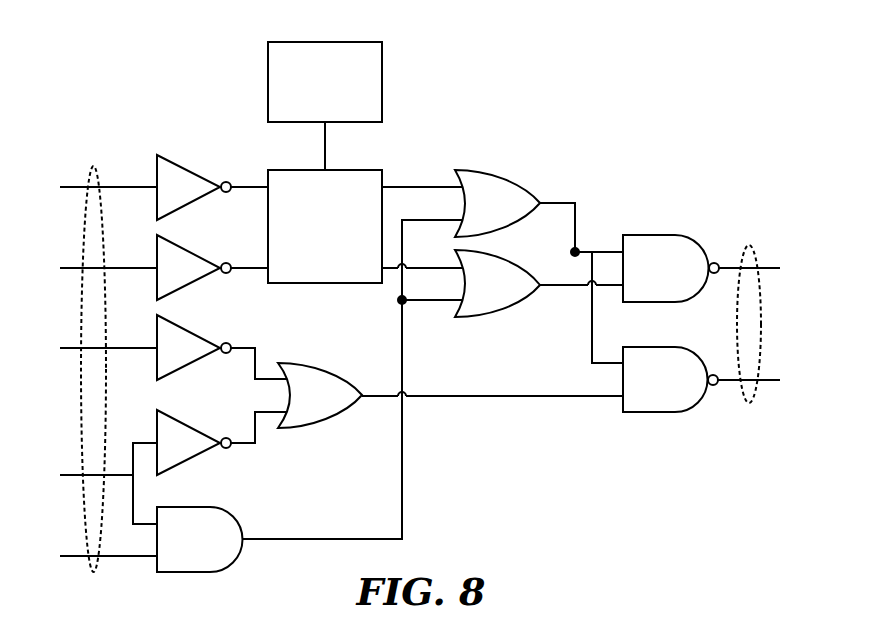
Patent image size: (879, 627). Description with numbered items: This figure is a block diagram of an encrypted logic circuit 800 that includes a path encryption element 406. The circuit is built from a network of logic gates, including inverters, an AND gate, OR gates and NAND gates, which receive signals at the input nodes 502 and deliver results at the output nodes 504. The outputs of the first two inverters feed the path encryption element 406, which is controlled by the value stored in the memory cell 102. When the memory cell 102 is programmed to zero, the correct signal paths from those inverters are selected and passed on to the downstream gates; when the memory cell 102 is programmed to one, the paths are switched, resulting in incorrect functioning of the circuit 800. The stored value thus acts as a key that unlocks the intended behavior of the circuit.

The circuit 800 is at (470, 523).
The memory cell 102 is at (311, 116).
The path encryption element 406 is at (311, 260).
The input nodes 502 is at (93, 165).
The output nodes 504 is at (749, 245).